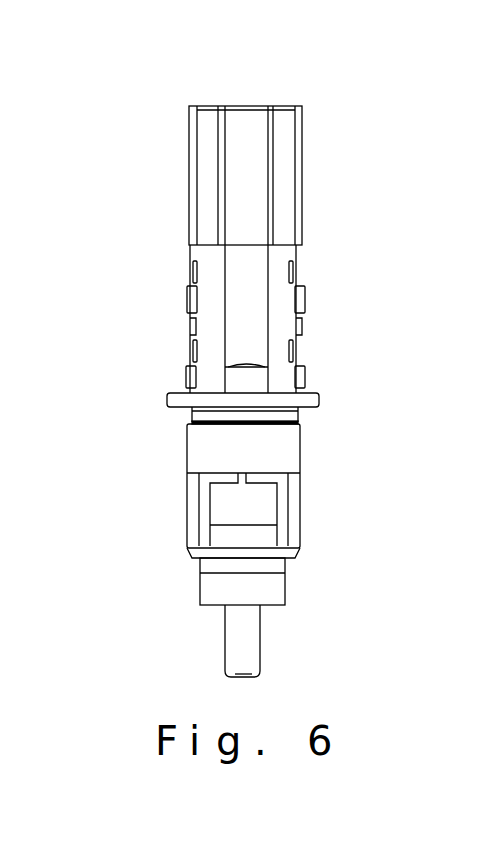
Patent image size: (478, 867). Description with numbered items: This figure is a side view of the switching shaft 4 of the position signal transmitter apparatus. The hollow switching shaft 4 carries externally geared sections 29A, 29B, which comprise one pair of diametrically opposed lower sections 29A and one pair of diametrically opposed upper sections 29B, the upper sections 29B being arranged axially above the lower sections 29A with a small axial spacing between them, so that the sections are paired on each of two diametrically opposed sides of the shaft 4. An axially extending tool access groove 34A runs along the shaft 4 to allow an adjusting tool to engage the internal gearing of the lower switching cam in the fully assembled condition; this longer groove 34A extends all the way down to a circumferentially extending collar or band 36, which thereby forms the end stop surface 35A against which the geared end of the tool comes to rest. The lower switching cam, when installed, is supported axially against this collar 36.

The switching shaft 4 is at (240, 104).
The tool access groove 34A is at (255, 195).
The end stop surface 35A is at (240, 393).
The lower externally geared sections 29A is at (185, 378).
The upper externally geared sections 29B is at (187, 303).
The circumferential collar 36 is at (313, 394).